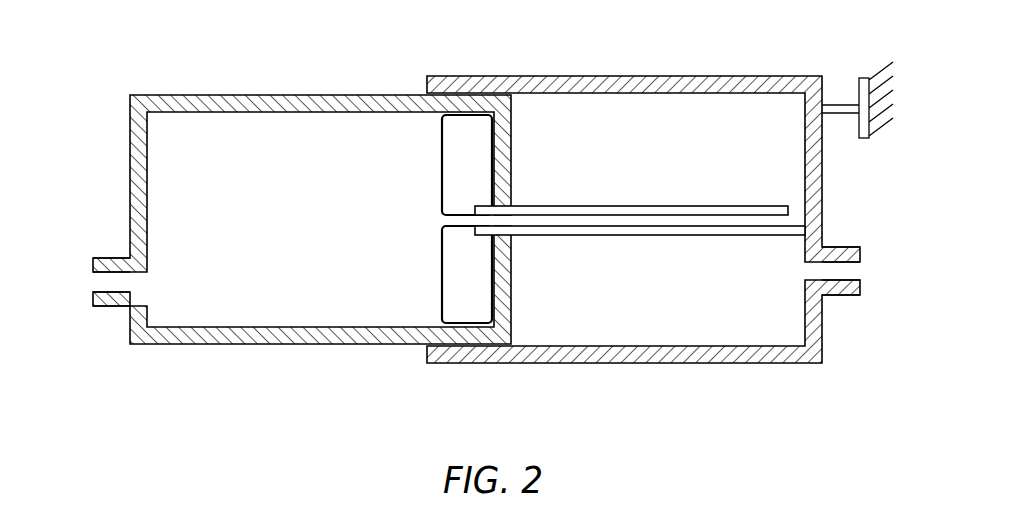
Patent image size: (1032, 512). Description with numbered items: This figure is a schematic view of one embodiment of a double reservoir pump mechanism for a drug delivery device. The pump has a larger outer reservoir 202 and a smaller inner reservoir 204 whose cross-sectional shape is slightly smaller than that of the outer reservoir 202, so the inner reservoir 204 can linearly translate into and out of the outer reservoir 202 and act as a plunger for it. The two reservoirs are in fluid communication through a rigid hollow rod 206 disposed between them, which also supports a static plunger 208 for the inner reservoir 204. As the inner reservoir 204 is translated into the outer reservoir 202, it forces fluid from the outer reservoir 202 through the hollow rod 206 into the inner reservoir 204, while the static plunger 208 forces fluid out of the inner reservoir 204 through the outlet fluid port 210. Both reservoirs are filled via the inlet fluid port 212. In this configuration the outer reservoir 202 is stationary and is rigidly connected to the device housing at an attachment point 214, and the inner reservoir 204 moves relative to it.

The outer reservoir 202 is at (562, 76).
The inner reservoir 204 is at (292, 95).
The rigid hollow rod 206 is at (635, 235).
The static plunger 208 is at (461, 285).
The outlet fluid port 210 is at (100, 282).
The inlet fluid port 212 is at (852, 272).
The attachment point 214 is at (863, 78).